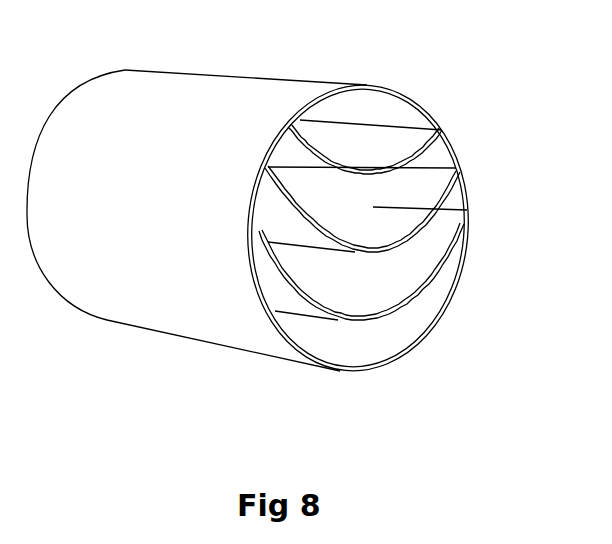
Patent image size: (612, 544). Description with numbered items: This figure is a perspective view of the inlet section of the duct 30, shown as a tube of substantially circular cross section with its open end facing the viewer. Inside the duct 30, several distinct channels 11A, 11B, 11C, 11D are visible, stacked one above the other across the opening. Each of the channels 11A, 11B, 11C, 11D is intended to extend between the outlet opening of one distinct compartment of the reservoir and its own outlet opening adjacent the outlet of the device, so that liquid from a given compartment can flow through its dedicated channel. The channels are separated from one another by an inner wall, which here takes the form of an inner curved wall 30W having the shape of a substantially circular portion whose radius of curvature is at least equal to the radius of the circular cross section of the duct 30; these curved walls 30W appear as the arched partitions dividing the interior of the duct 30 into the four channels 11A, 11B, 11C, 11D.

The duct 30 is at (138, 308).
The inner curved wall 30W is at (328, 155).
The channel 11A is at (358, 344).
The channel 11B is at (368, 288).
The channel 11C is at (440, 206).
The channel 11D is at (368, 148).